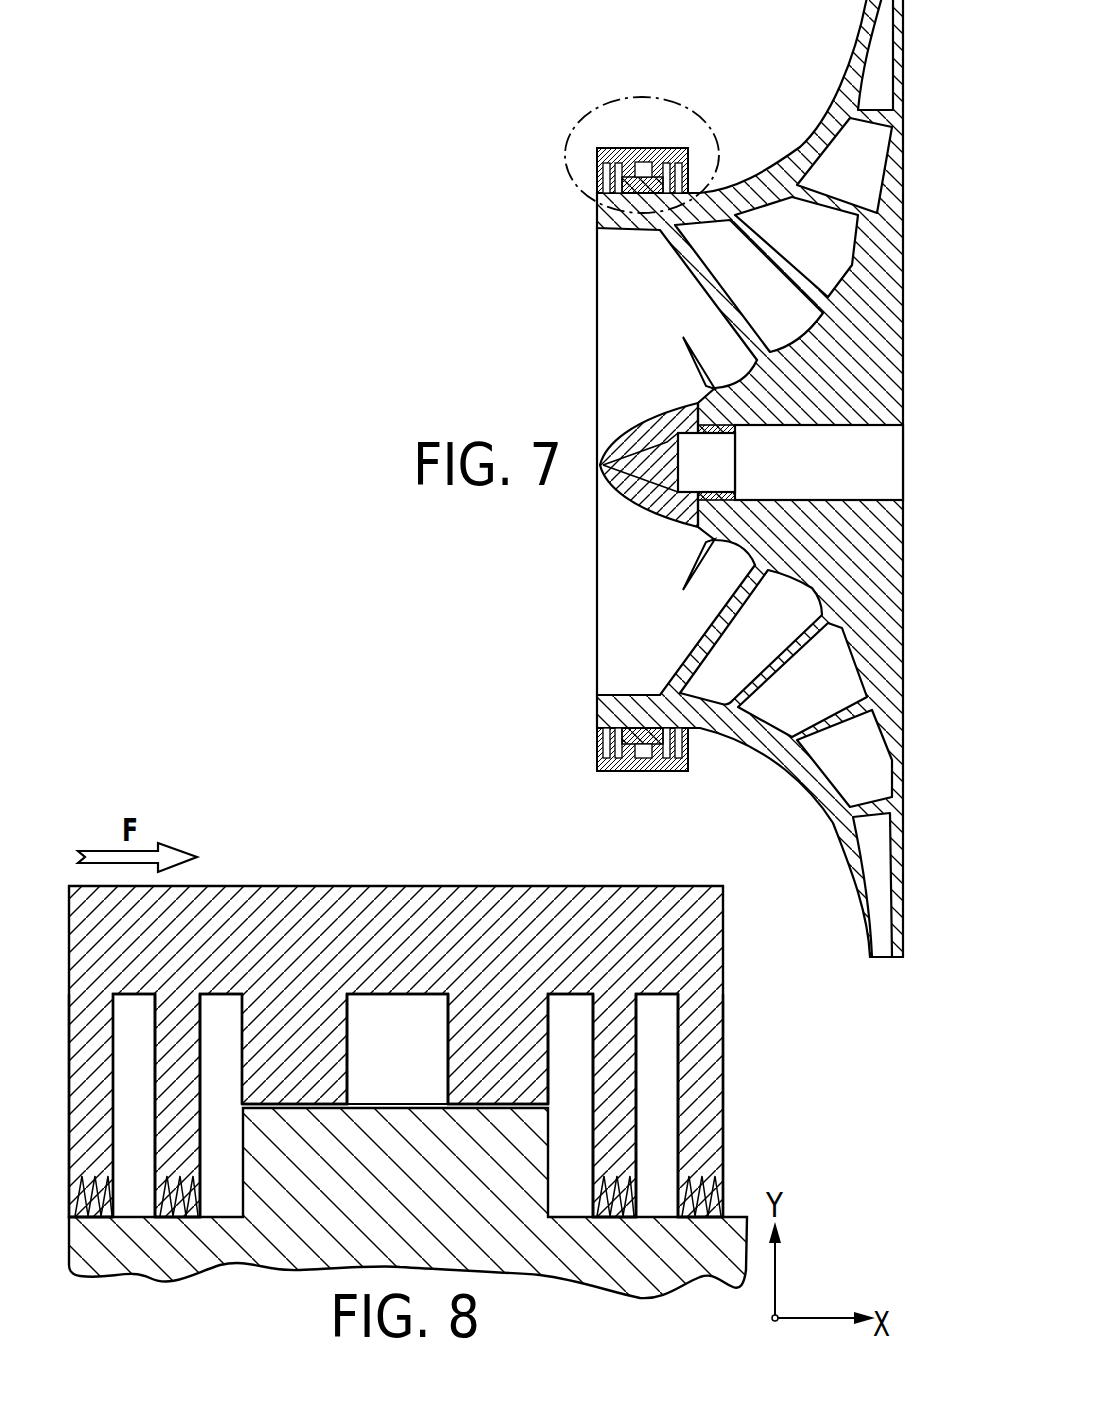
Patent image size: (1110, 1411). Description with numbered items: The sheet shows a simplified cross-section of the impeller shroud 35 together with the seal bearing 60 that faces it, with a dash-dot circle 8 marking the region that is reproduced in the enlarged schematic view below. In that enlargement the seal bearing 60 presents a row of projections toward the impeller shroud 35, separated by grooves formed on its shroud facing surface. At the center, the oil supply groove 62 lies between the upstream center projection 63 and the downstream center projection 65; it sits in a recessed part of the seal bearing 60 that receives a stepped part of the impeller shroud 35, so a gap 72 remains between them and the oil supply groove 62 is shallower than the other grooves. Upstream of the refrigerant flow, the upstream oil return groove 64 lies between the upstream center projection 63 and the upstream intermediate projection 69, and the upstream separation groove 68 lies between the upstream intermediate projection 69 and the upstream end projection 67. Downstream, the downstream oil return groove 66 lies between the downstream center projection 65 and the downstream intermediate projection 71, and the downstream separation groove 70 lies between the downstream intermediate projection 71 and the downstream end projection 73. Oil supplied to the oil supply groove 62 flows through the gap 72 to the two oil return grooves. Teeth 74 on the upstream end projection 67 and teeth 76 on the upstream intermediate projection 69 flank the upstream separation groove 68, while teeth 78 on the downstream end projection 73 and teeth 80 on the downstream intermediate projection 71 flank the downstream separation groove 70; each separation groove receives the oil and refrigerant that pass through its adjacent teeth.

In FIG. 7, the circle 8 is at (565, 142).
In FIG. 7, the impeller shroud 35 is at (770, 190).
In FIG. 8, the impeller shroud 35 is at (505, 1243).
In FIG. 7, the seal bearing 60 is at (647, 140).
In FIG. 8, the seal bearing 60 is at (533, 878).
In FIG. 8, the oil supply groove 62 is at (370, 1027).
In FIG. 8, the upstream center projection 63 is at (283, 1033).
In FIG. 8, the upstream oil return groove 64 is at (213, 1100).
In FIG. 8, the downstream center projection 65 is at (485, 1040).
In FIG. 8, the downstream oil return groove 66 is at (577, 1033).
In FIG. 8, the upstream end projection 67 is at (95, 1060).
In FIG. 8, the upstream separation groove 68 is at (135, 1030).
In FIG. 8, the upstream intermediate projection 69 is at (167, 1125).
In FIG. 8, the downstream separation groove 70 is at (650, 1097).
In FIG. 8, the downstream intermediate projection 71 is at (617, 1053).
In FIG. 8, the gap 72 is at (395, 1090).
In FIG. 8, the downstream end projection 73 is at (700, 1120).
In FIG. 8, the teeth 74 is at (78, 1207).
In FIG. 8, the teeth 76 is at (152, 1208).
In FIG. 8, the teeth 78 is at (722, 1207).
In FIG. 8, the teeth 80 is at (637, 1207).